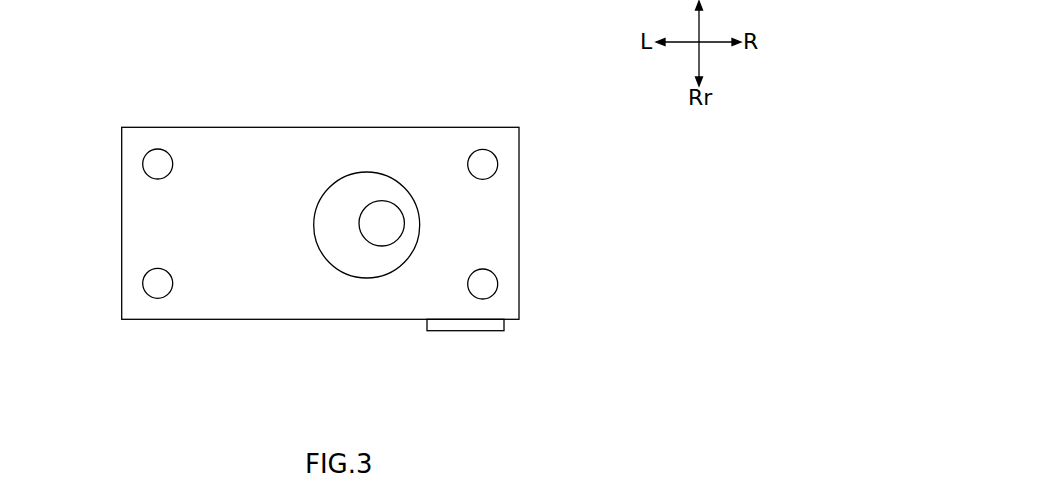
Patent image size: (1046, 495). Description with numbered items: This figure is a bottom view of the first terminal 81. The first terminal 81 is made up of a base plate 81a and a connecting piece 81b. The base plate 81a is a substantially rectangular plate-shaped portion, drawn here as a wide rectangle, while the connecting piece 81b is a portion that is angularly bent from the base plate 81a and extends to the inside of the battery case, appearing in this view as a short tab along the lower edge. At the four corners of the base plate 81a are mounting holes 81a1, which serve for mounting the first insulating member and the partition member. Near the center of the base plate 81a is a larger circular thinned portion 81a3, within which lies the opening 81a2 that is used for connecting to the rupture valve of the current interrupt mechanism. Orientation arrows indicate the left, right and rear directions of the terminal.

The bracket / mounting plate assembly 81 is at (322, 215).
The plate portion 81a is at (285, 152).
The mounting holes 81a1 is at (143, 164).
The inner opening 81a2 is at (385, 205).
The circular recess 81a3 is at (348, 252).
The tab portion 81b is at (463, 331).